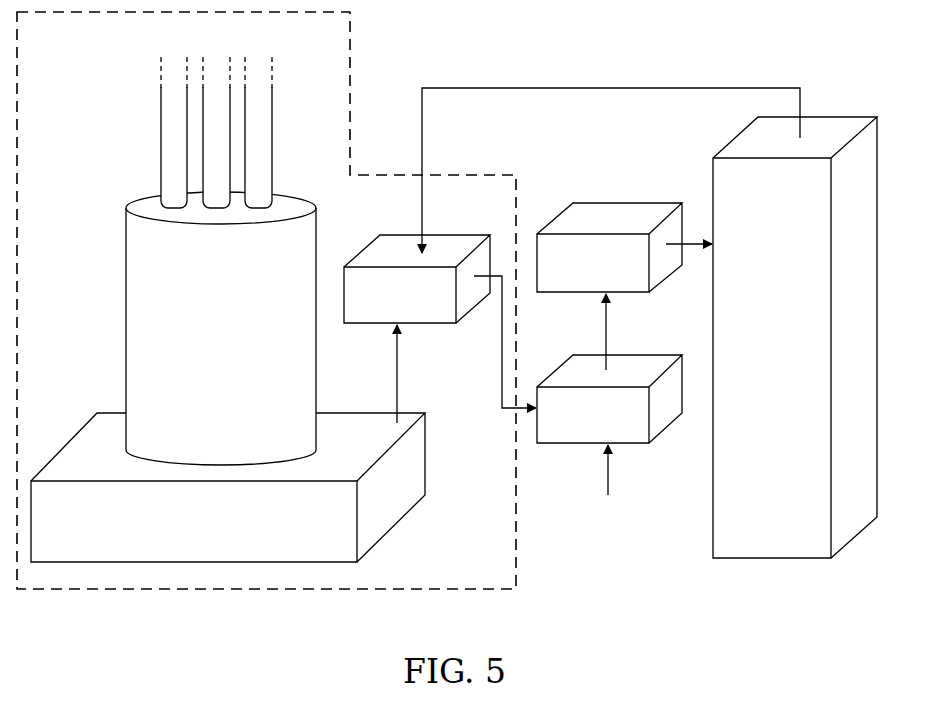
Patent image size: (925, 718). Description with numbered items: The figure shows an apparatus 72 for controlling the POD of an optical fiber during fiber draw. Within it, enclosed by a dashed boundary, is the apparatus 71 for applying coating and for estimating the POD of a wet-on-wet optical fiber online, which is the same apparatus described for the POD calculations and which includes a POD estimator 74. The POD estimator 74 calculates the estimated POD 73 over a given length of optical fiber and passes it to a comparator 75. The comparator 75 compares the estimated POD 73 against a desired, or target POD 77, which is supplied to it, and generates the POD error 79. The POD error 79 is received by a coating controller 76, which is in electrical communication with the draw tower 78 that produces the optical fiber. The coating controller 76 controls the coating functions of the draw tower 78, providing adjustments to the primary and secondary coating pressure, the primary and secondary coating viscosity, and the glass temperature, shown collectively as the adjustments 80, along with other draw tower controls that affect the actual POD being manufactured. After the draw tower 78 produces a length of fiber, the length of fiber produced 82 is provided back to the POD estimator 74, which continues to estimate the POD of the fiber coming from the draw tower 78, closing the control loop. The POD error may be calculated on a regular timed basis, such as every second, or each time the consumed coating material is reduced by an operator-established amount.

The apparatus for applying coating and estimating POD 71 is at (457, 535).
The apparatus to control POD 72 is at (618, 540).
The estimated POD 73 is at (500, 335).
The POD estimator 74 is at (385, 303).
The comparator 75 is at (579, 422).
The coating controller 76 is at (579, 267).
The target POD 77 is at (608, 478).
The draw tower 78 is at (753, 326).
The POD error 79 is at (608, 320).
The coating control adjustments 80 is at (700, 238).
The length of fiber produced 82 is at (598, 76).